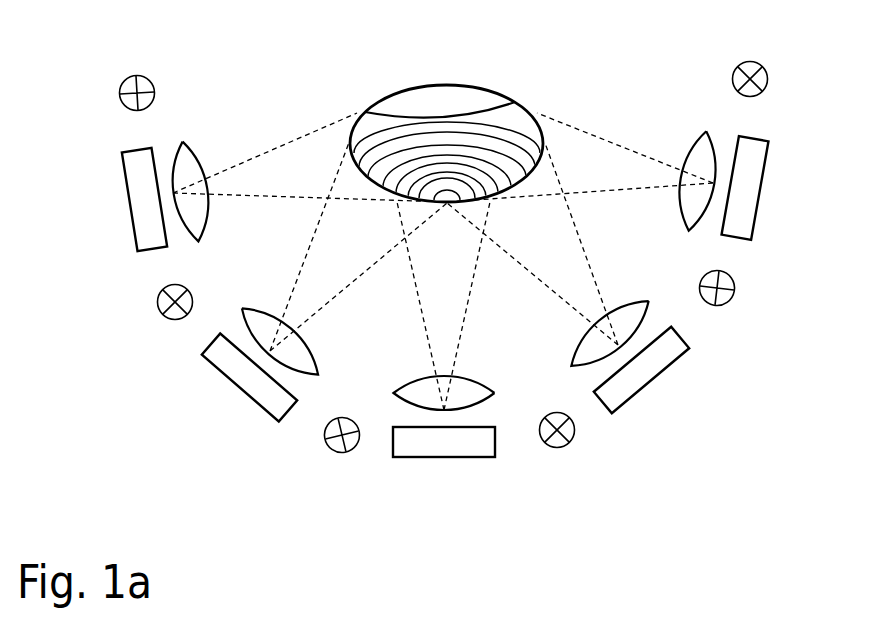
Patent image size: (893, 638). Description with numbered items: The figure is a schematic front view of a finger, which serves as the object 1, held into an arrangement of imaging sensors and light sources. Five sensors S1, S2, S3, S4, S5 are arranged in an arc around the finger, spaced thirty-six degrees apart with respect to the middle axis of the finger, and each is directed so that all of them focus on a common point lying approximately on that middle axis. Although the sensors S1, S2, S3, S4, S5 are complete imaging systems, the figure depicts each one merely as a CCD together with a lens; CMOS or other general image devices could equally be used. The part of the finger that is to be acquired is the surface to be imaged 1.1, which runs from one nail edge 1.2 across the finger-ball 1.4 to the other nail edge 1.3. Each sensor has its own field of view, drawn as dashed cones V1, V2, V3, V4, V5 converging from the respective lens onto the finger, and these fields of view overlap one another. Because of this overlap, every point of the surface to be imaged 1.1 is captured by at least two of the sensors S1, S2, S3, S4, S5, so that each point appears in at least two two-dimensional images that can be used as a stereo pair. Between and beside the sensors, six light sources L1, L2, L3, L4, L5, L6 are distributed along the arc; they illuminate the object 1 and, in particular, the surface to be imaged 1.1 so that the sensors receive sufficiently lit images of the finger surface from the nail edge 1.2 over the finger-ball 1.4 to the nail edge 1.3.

The object 1 is at (535, 116).
The surface to be imaged 1.1 is at (350, 148).
The nail edge 1.2 is at (382, 98).
The nail edge 1.3 is at (513, 101).
The finger-ball 1.4 is at (513, 132).
The sensor S1 is at (151, 195).
The sensor S2 is at (265, 363).
The sensor S3 is at (444, 442).
The sensor S4 is at (628, 358).
The sensor S5 is at (739, 184).
The light source L1 is at (114, 90).
The light source L2 is at (154, 311).
The light source L3 is at (340, 459).
The light source L4 is at (571, 454).
The light source L5 is at (738, 300).
The light source L6 is at (772, 83).
The field of view V1 is at (310, 161).
The field of view V2 is at (358, 245).
The field of view V3 is at (443, 306).
The field of view V4 is at (532, 244).
The field of view V5 is at (580, 157).